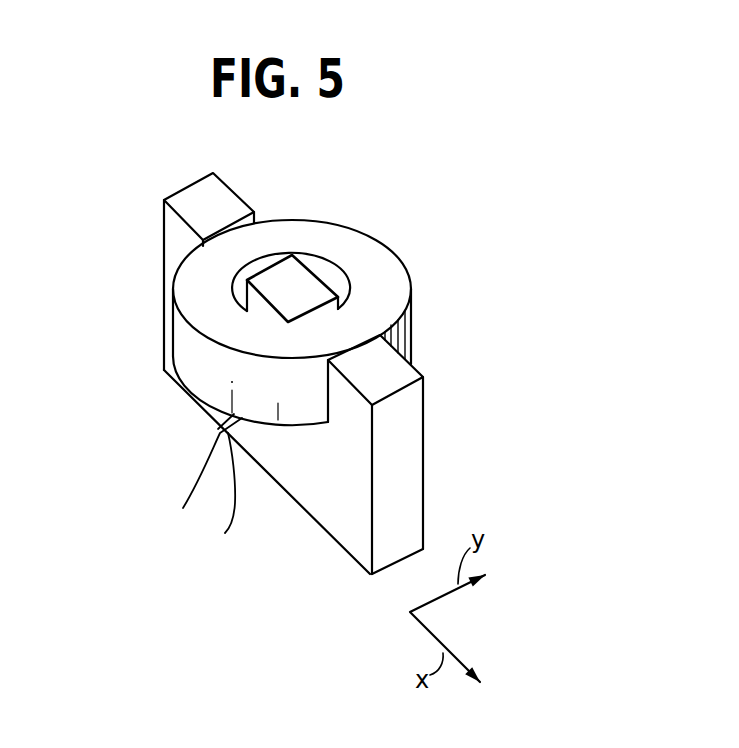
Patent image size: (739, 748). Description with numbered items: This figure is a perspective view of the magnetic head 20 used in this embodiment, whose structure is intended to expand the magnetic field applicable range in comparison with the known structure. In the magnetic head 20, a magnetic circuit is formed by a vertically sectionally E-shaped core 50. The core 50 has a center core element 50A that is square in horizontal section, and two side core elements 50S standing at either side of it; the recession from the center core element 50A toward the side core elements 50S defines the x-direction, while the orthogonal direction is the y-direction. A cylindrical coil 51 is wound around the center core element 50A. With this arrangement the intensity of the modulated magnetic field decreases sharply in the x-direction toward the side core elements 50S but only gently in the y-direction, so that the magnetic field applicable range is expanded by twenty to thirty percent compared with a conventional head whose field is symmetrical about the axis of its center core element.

The magnetic head 20 is at (150, 421).
The E-shaped core 50 is at (333, 524).
The side core elements 50S is at (221, 196).
The center core element 50A is at (306, 288).
The cylindrical coil 51 is at (192, 352).